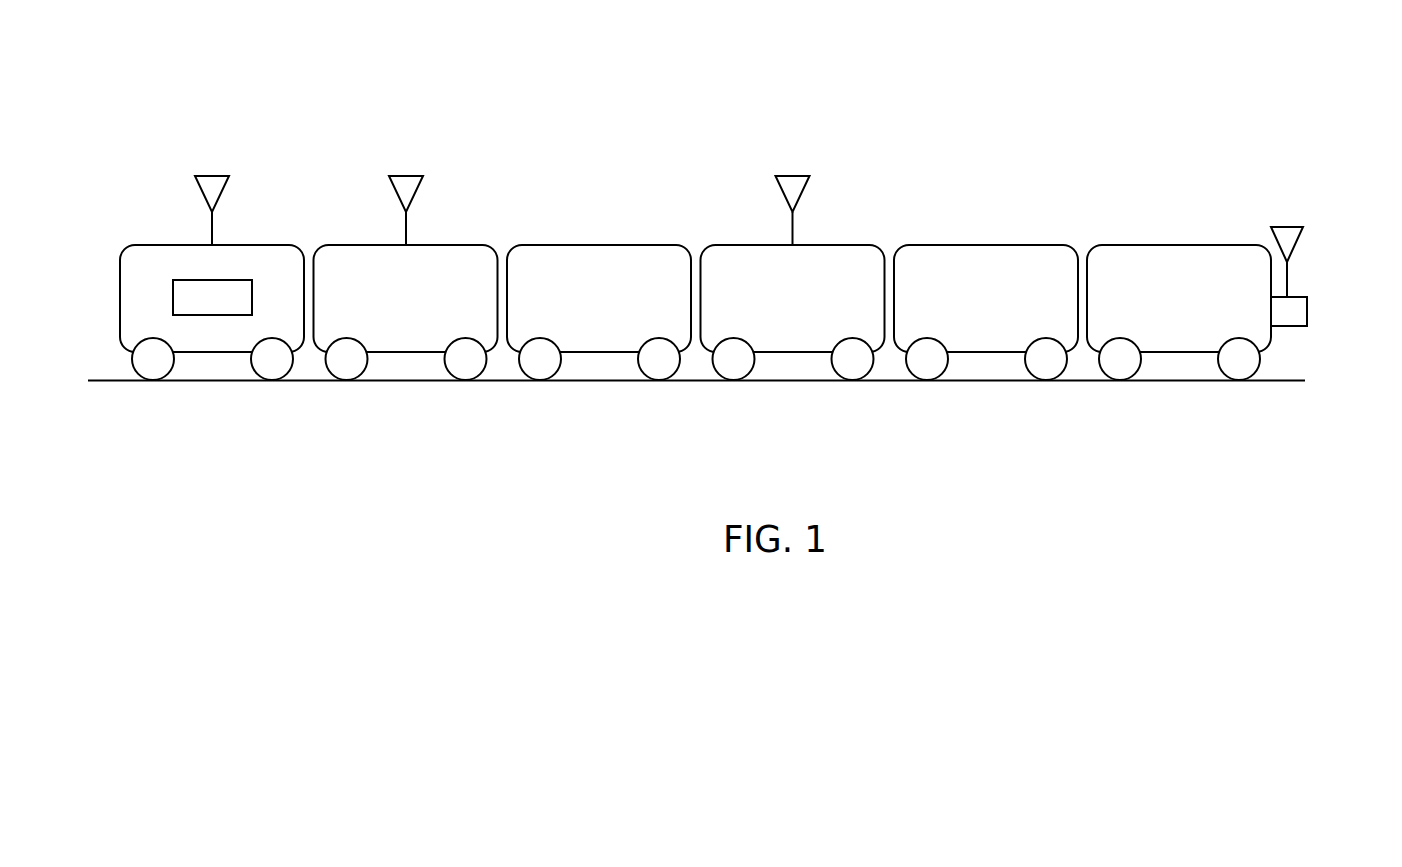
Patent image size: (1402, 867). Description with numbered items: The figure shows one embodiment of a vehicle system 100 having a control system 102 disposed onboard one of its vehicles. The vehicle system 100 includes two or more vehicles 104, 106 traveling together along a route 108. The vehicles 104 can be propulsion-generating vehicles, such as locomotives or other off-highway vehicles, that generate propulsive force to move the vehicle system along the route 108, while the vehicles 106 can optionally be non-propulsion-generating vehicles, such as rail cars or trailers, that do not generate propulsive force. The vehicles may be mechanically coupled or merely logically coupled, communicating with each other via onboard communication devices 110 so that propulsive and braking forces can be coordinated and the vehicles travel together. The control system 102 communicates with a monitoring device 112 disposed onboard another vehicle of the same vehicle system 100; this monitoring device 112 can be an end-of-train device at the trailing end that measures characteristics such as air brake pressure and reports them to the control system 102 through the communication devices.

The vehicle system 100 is at (1157, 83).
The control system 102 is at (215, 315).
The propulsion-generating vehicle 104 is at (273, 243).
The non-propulsion-generating vehicle 106 is at (598, 244).
The route 108 is at (1010, 382).
The onboard communication device 110 is at (212, 172).
The monitoring device 112 is at (1308, 308).